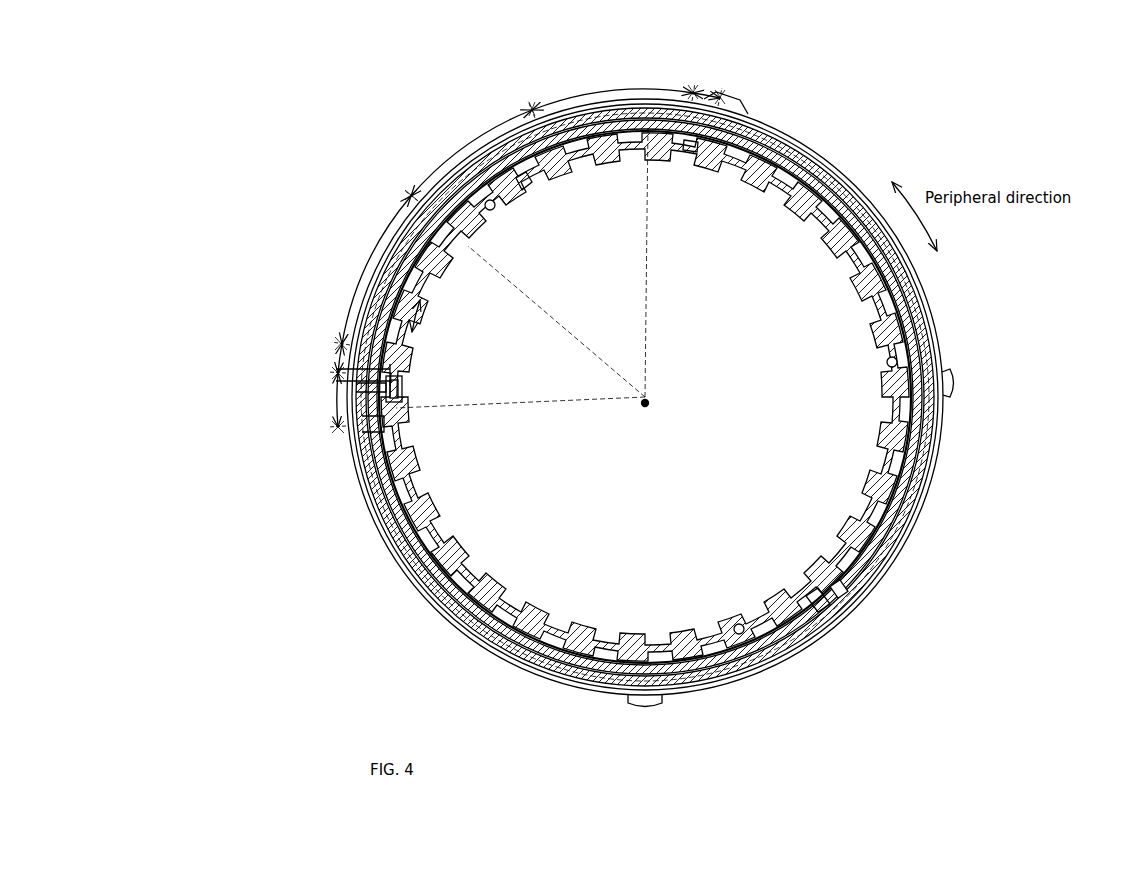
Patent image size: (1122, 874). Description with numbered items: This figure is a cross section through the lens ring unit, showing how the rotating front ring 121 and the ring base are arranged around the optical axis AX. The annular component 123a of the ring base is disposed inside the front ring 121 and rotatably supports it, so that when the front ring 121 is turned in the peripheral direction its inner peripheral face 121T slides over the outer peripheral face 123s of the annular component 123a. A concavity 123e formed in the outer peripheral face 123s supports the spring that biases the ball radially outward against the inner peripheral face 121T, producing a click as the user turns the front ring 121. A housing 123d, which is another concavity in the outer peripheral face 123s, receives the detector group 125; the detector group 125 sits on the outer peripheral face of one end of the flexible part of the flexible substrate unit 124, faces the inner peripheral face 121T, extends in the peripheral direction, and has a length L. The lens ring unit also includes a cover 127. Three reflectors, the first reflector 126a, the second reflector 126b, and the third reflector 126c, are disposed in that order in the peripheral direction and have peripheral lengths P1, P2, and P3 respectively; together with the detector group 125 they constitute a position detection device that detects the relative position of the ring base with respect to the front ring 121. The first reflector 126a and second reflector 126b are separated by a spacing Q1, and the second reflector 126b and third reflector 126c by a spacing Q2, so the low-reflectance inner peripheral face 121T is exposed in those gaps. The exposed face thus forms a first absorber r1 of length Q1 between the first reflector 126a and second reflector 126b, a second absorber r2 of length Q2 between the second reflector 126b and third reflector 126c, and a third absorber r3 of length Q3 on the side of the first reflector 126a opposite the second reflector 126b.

The front ring 121 is at (890, 572).
The inner peripheral face 121T is at (818, 605).
The annular component 123a is at (886, 494).
The outer peripheral face 123s is at (842, 592).
The concavity 123e is at (752, 640).
The housing 123d is at (496, 210).
The flexible substrate unit 124 is at (403, 389).
The detector group 125 is at (374, 424).
The first reflector 126a is at (336, 375).
The second reflector 126b is at (524, 190).
The third reflector 126c is at (690, 150).
The cover 127 is at (380, 388).
The first absorber r1 is at (470, 248).
The second absorber r2 is at (650, 128).
The third absorber r3 is at (396, 408).
The length L is at (437, 305).
The optical axis AX is at (645, 403).
The length P1 is at (335, 360).
The length P2 is at (455, 162).
The length P3 is at (712, 90).
The spacing Q1 is at (363, 285).
The spacing Q2 is at (640, 90).
The length Q3 is at (336, 410).